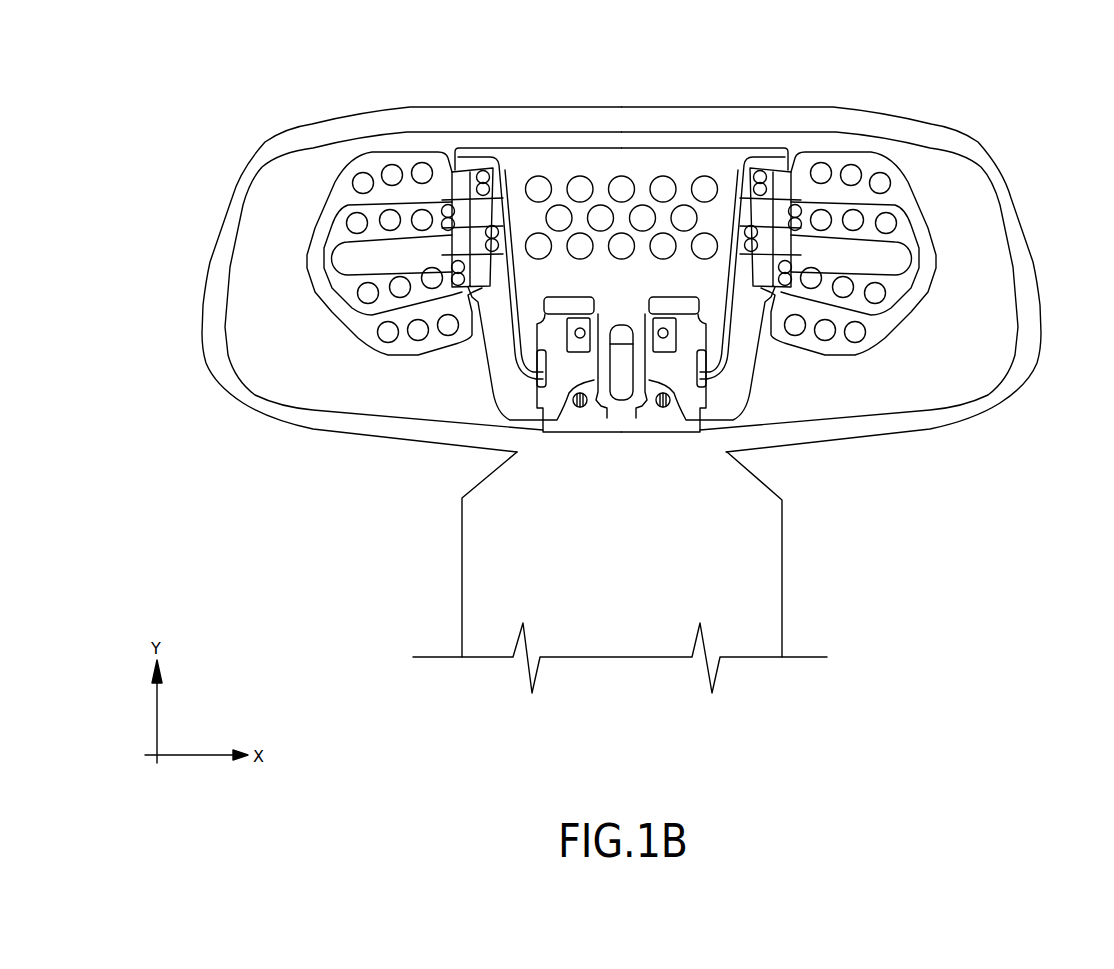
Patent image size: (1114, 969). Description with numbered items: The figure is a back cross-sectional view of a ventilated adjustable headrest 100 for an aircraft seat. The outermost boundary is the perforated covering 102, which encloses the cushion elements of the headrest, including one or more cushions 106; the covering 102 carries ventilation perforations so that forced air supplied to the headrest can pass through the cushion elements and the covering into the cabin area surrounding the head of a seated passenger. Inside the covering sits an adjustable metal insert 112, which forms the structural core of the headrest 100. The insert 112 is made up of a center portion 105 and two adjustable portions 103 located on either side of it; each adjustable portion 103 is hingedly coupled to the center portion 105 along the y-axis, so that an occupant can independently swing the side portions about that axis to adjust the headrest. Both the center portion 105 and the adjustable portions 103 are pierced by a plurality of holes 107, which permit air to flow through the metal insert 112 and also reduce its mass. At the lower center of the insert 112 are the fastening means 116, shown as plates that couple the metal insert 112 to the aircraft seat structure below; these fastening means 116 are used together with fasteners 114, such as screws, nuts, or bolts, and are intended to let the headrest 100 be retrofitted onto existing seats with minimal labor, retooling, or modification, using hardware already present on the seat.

The ventilated adjustable headrest 100 is at (1020, 83).
The perforated covering 102 is at (214, 355).
The adjustable portions 103 is at (392, 195).
The center portion 105 is at (642, 190).
The cushions 106 is at (263, 382).
The holes 107 is at (537, 187).
The adjustable metal insert 112 is at (517, 399).
The fasteners 114 is at (582, 407).
The fastening means 116 is at (679, 378).